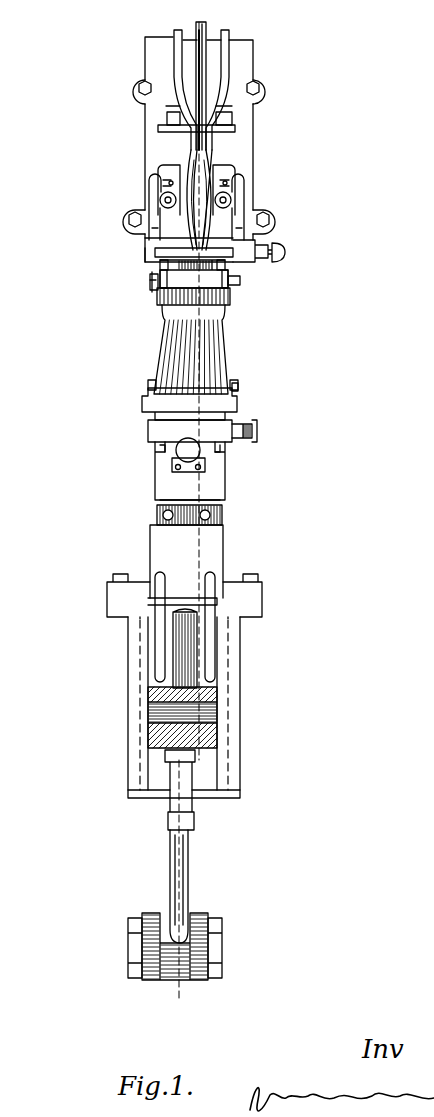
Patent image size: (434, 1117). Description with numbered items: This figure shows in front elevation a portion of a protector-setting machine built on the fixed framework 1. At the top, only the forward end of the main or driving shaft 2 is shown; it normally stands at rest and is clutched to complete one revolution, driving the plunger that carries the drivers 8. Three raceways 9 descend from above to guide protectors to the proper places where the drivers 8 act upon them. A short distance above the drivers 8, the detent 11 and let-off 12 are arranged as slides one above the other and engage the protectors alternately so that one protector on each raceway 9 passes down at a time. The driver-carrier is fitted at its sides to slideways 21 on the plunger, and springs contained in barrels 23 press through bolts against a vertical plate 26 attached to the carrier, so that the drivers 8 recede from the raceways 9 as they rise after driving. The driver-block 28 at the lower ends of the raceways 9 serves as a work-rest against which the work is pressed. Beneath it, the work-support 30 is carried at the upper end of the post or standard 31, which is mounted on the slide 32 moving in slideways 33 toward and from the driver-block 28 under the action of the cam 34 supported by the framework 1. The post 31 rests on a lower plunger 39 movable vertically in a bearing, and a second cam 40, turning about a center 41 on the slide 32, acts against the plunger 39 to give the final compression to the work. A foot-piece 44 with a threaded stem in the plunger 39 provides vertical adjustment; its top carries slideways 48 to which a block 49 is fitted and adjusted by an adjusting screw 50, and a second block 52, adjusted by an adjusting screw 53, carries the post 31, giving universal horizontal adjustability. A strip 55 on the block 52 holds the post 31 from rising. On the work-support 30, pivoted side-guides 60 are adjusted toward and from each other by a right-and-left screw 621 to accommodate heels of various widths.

The fixed framework 1 is at (255, 140).
The main or driving shaft 2 is at (199, 8).
The drivers 8 is at (210, 216).
The raceways 9 is at (175, 58).
The detent 11 is at (178, 115).
The let-off 12 is at (185, 123).
The slideways 21 is at (160, 186).
The barrels 23 is at (160, 200).
The vertical plate 26 is at (166, 172).
The driver-block 28 is at (238, 278).
The work-support 30 is at (176, 280).
The post or standard 31 is at (158, 345).
The slide 32 is at (225, 550).
The slideways 33 is at (128, 740).
The cam 34 is at (170, 870).
The plunger 39 is at (223, 512).
The second cam 40 is at (173, 640).
The center 41 is at (202, 712).
The foot-piece 44 is at (226, 478).
The slideways 48 is at (160, 450).
The block 49 is at (148, 432).
The adjusting screw 50 is at (186, 453).
The second block 52 is at (240, 403).
The adjusting screw 53 is at (257, 428).
The strip 55 is at (238, 385).
The side-guides 60 is at (158, 282).
The right-and-left screw 621 is at (158, 284).